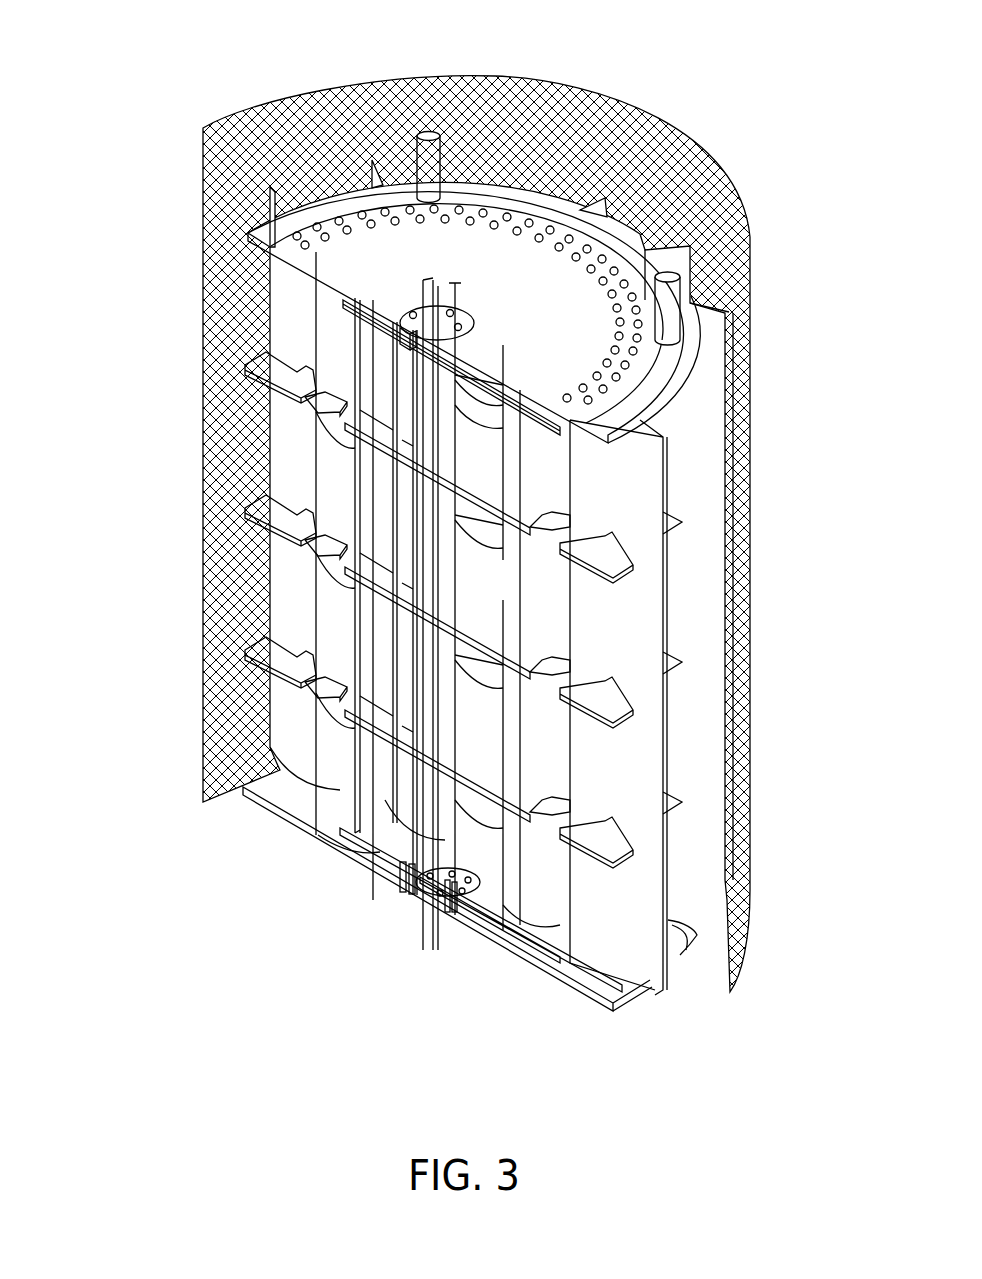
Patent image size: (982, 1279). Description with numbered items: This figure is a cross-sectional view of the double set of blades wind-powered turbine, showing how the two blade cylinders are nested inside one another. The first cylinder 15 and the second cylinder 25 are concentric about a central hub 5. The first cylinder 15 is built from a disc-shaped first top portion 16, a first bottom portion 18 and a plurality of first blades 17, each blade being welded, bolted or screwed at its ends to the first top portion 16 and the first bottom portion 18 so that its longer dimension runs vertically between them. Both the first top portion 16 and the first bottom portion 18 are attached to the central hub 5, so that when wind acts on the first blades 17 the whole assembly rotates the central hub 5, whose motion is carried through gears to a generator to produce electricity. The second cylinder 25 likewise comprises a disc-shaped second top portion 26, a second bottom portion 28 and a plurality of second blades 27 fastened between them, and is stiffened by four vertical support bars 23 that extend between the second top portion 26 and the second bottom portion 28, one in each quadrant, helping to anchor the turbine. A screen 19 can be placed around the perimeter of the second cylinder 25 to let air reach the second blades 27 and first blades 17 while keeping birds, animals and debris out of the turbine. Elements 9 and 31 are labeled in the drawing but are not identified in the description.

The central hub 5 is at (440, 282).
The mixing blade 9 is at (272, 512).
The first cylinder 15 is at (337, 606).
The first top portion 16 is at (338, 344).
The first blades 17 is at (330, 763).
The first bottom portion 18 is at (390, 834).
The screen 19 is at (275, 700).
The support bars 23 is at (432, 132).
The second cylinder 25 is at (637, 983).
The second top portion 26 is at (626, 268).
The second blades 27 is at (383, 187).
The second bottom portion 28 is at (378, 867).
The vessel shell 31 is at (207, 128).